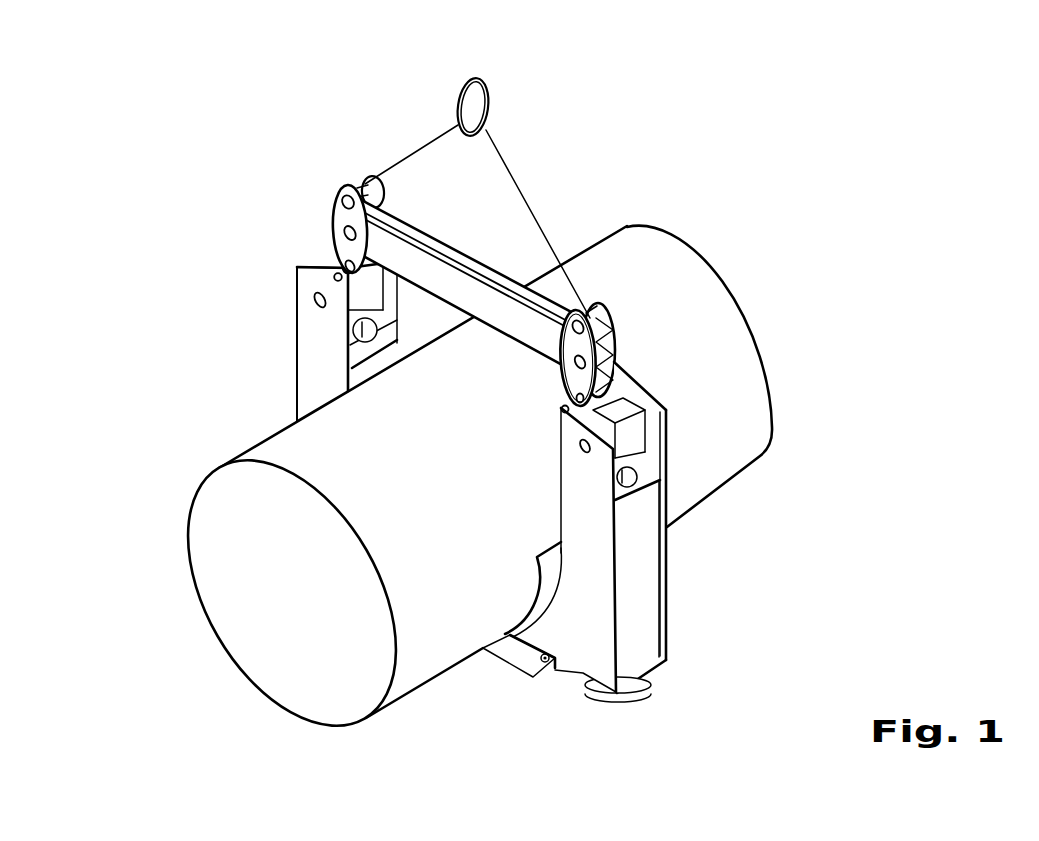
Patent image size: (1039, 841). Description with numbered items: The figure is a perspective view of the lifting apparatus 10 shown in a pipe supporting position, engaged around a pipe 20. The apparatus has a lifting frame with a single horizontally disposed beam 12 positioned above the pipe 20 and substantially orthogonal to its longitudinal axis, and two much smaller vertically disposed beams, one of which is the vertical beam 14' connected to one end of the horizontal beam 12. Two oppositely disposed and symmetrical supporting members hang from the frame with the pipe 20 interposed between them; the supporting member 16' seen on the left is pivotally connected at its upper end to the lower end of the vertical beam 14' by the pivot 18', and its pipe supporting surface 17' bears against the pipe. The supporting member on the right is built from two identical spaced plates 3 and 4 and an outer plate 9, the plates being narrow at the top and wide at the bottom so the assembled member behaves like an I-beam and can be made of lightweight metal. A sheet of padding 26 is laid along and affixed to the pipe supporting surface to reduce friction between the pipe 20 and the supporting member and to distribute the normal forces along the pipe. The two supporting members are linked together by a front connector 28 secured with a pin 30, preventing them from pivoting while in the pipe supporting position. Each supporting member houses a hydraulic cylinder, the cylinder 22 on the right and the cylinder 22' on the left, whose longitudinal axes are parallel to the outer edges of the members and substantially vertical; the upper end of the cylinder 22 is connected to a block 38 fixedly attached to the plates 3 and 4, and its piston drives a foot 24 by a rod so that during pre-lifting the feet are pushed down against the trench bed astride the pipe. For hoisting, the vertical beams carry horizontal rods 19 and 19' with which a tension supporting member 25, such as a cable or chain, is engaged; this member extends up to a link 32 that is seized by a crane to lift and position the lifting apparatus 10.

The lifting apparatus 10 is at (782, 596).
The pipe 20 is at (222, 623).
The plate 4 is at (668, 618).
The plate 3 is at (587, 647).
The outer plate 9 is at (645, 558).
The block 38 is at (632, 440).
The cylinder 22 is at (674, 469).
The cylinder 22' is at (291, 322).
The horizontal beam 12 is at (490, 273).
The vertical beam 14' is at (319, 201).
The horizontal rod 19 is at (624, 291).
The horizontal rod 19' is at (353, 147).
The pivot 18' is at (295, 240).
The supporting member 16' is at (279, 333).
The pipe supporting surface 17' is at (287, 326).
The tension supporting member 25 is at (517, 187).
The link 32 is at (483, 81).
The sheet of padding 26 is at (547, 578).
The connector 28 is at (512, 666).
The pin 30 is at (546, 664).
The foot 24 is at (637, 700).